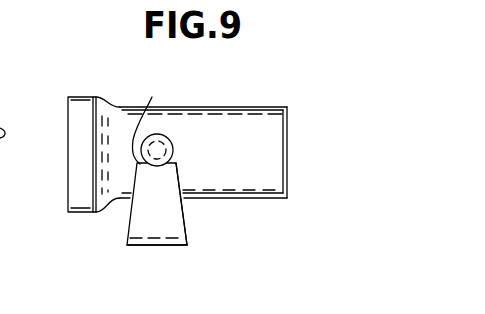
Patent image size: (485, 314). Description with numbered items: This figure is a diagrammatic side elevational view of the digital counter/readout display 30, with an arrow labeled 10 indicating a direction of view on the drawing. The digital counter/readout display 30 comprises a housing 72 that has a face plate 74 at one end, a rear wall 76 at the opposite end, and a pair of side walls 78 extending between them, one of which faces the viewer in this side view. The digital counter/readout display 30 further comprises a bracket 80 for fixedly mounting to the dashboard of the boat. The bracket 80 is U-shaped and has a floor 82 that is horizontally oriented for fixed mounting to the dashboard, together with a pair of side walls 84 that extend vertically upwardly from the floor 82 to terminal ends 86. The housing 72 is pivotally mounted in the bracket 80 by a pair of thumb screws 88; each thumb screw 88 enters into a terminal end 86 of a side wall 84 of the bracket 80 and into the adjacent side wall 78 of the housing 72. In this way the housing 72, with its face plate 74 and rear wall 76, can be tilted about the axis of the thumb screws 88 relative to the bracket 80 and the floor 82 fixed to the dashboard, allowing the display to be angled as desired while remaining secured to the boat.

The assembly 10 is at (314, 153).
The digital counter/readout display 30 is at (110, 85).
The housing 72 is at (213, 105).
The face plate 74 is at (68, 119).
The rear wall 76 is at (288, 122).
The side walls 78 is at (248, 170).
The bracket 80 is at (164, 250).
The floor 82 is at (137, 248).
The side walls 84 is at (183, 205).
The terminal ends 86 is at (135, 119).
The thumb screws 88 is at (172, 156).